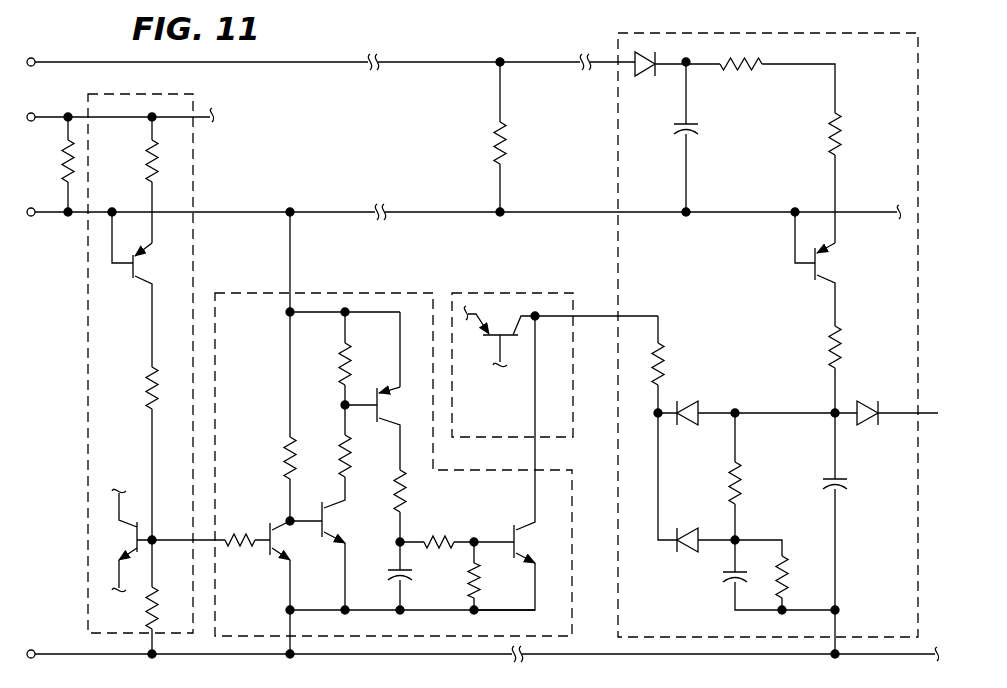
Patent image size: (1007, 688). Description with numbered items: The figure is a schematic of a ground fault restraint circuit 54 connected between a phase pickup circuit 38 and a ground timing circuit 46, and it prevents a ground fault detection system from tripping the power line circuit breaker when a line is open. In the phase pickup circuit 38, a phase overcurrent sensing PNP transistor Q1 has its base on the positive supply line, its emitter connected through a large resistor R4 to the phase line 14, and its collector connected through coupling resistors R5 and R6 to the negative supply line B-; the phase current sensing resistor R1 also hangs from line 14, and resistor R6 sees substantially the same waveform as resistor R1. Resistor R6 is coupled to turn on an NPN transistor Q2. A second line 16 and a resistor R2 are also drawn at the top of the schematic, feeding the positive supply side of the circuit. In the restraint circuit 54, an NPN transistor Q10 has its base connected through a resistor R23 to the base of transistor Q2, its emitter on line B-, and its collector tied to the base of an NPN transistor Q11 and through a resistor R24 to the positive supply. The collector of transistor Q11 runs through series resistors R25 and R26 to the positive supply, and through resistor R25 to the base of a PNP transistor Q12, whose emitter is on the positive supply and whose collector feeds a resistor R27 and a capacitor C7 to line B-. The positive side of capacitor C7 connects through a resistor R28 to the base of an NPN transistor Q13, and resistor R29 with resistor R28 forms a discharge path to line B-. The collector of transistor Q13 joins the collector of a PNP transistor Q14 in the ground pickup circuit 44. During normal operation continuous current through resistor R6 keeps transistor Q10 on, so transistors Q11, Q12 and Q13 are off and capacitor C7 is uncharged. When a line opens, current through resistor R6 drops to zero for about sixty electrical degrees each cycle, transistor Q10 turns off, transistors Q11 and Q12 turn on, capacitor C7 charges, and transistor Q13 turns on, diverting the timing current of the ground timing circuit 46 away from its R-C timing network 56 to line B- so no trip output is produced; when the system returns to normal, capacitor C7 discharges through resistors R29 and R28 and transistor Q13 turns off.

The input terminal line 16 is at (329, 52).
The phase terminal or line 14 is at (119, 106).
The phase pickup circuit 38 is at (197, 293).
The ground fault restraint circuit 54 is at (392, 292).
The ground pickup circuit 44 is at (514, 292).
The ground timing circuit 46 is at (781, 343).
The R-C timing network 56 is at (767, 614).
The phase current sensing resistor R1 is at (57, 164).
The resistor R2 is at (516, 137).
The resistor R4 is at (138, 180).
The coupling resistor R5 is at (138, 453).
The coupling resistor R6 is at (165, 597).
The resistor R23 is at (211, 529).
The resistor R24 is at (282, 368).
The resistor R25 is at (366, 441).
The resistor R26 is at (345, 358).
The resistor R27 is at (421, 508).
The resistor R28 is at (439, 531).
The resistor R29 is at (493, 578).
The capacitor C7 is at (414, 578).
The phase overcurrent sensing PNP transistor Q1 is at (140, 289).
The NPN transistor Q2 is at (130, 540).
The NPN transistor Q10 is at (291, 587).
The NPN transistor Q11 is at (343, 545).
The PNP transistor Q12 is at (383, 391).
The output transistor Q13 is at (515, 463).
The PNP transistor Q14 is at (501, 330).
The B− power supply line B- is at (483, 645).